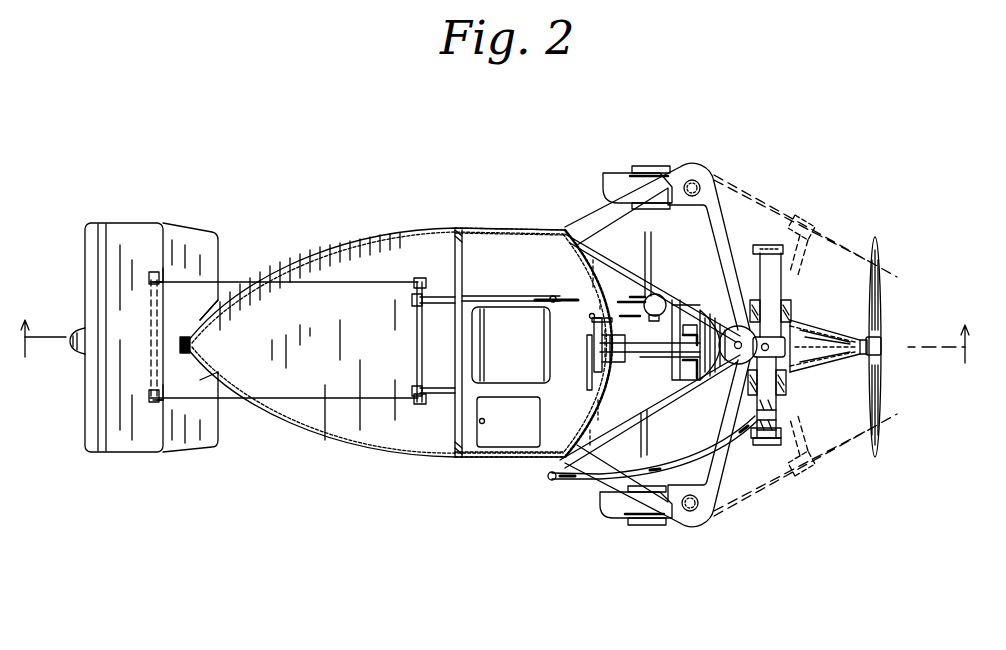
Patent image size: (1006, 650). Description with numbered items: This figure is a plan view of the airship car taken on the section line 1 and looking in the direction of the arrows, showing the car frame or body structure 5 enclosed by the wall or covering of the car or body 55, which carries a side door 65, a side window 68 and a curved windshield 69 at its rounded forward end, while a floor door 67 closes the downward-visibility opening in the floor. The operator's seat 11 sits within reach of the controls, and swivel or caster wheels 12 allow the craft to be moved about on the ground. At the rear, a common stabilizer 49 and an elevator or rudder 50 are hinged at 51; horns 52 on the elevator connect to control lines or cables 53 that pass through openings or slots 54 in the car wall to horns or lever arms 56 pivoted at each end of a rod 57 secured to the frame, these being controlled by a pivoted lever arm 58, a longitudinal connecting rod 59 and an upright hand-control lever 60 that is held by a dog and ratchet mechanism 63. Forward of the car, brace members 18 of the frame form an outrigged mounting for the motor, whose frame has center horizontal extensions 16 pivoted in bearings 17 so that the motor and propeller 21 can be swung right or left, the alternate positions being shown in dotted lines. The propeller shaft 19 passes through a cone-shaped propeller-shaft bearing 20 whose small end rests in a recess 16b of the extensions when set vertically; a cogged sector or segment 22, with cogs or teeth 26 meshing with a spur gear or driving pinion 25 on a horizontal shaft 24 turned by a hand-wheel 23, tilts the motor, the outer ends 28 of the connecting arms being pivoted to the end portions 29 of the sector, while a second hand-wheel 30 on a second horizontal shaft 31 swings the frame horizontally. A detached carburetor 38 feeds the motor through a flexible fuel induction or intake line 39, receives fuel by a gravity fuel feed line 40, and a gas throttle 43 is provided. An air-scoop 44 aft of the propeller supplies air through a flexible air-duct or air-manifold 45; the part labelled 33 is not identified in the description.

The gas envelope or cell 1 is at (496, 341).
The car frame or body structure 5 is at (188, 345).
The operator's seat 11 is at (511, 345).
The swivel or caster wheels 12 is at (72, 345).
The center horizontal extensions 16 is at (782, 300).
The recess 16b is at (786, 372).
The bearings 17 is at (784, 318).
The brace members 18 is at (716, 230).
The propeller shaft 19 is at (881, 336).
The propeller-shaft bearing 20 is at (852, 357).
The propeller 21 is at (856, 245).
The cogged or geared sector or segment 22 is at (795, 338).
The controlling or adjusting hand-wheel 23 is at (587, 371).
The horizontal shaft 24 is at (640, 360).
The spur gear or driving pinion 25 is at (672, 376).
The cogs or teeth 26 is at (712, 380).
The outer ends 28 is at (748, 356).
The end portions 29 is at (786, 346).
The second controlling or adjusting hand-wheel 30 is at (594, 325).
The second horizontal shaft 31 is at (652, 342).
The bracket 33 is at (687, 340).
The carburetor 38 is at (662, 298).
The fuel induction or intake line 39 is at (706, 300).
The gravity fuel feed line 40 is at (640, 300).
The gas throttle 43 is at (595, 315).
The air-scoop 44 is at (786, 420).
The flexible air-duct or air-manifold 45 is at (690, 448).
The common stabilizer 49 is at (218, 262).
The elevator or rudder 50 is at (86, 251).
The hinge 51 is at (151, 312).
The horns 52 is at (149, 282).
The control lines or cables 53 is at (348, 284).
The openings or slots 54 is at (240, 290).
The car or body 55 is at (348, 240).
The horns or lever arms 56 is at (425, 280).
The rod 57 is at (417, 331).
The pivoted lever arm 58 is at (412, 300).
The longitudinal connecting rod 59 is at (500, 296).
The upright hand-control lever 60 is at (552, 296).
The dog and ratchet mechanism 63 is at (569, 297).
The side door 65 is at (500, 460).
The floor door 67 is at (508, 422).
The side window 68 is at (511, 226).
The curved windshield 69 is at (600, 396).